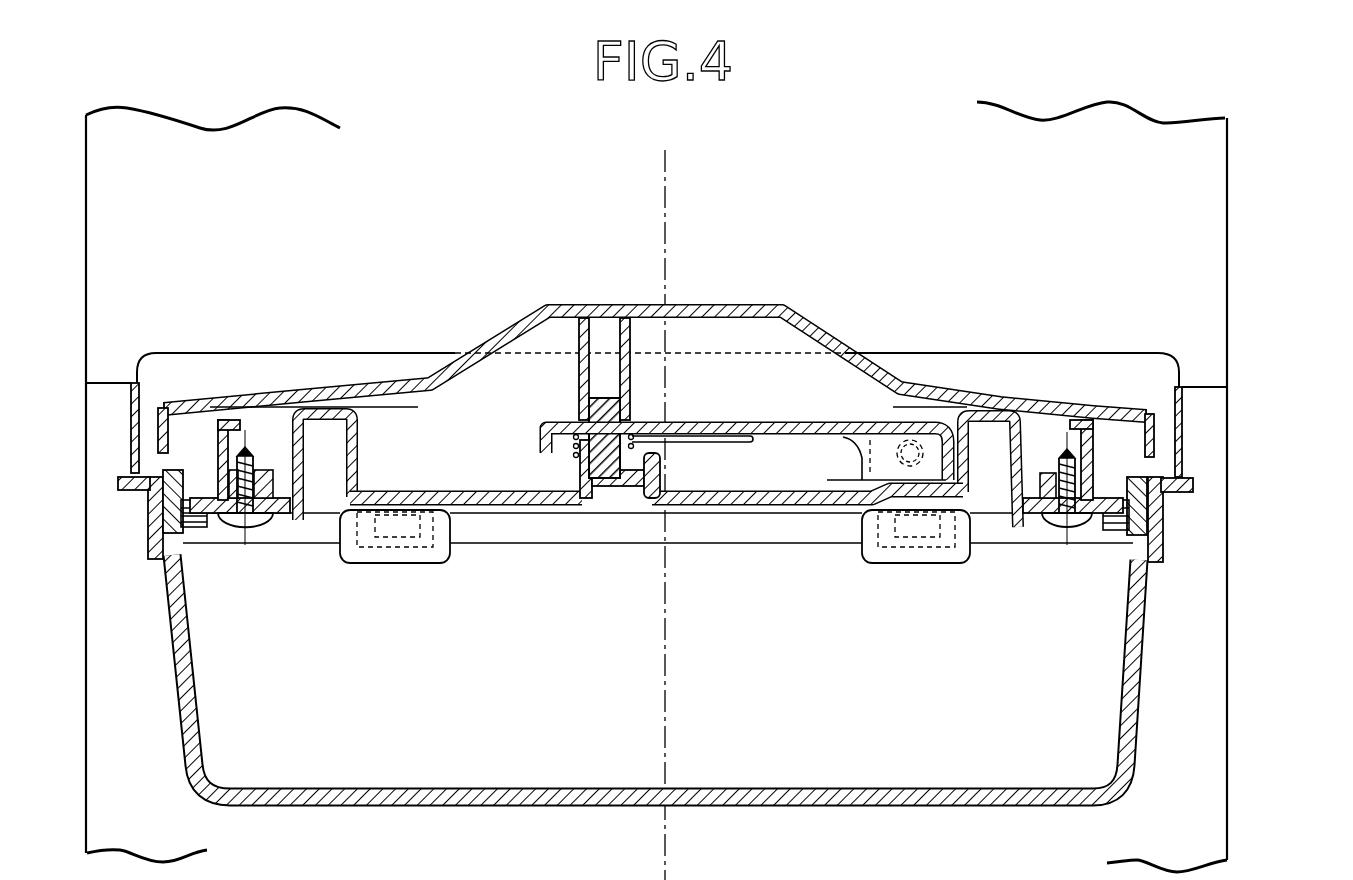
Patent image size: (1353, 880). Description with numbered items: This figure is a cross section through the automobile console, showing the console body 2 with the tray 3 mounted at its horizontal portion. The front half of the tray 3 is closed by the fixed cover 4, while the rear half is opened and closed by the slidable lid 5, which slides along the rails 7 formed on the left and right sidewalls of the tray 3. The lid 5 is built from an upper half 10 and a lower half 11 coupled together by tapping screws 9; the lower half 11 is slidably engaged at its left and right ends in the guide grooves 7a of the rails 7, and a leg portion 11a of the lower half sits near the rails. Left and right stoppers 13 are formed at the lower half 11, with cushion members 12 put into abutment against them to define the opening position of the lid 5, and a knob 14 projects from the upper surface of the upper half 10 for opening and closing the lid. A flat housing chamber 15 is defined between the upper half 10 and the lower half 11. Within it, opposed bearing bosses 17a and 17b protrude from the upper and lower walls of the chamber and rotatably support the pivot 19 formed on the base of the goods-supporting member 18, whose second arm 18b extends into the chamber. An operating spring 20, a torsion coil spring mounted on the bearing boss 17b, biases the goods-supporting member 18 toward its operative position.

The console body 2 is at (1227, 233).
The tray 3 is at (725, 808).
The fixed cover 4 is at (553, 546).
The slidable lid 5 is at (656, 352).
The rail 7 is at (150, 490).
The guide groove 7a is at (200, 522).
The tapping screw 9 is at (250, 522).
The upper half 10 is at (905, 380).
The lower half 11 is at (922, 274).
The leg portion 11a is at (225, 522).
The cushion member 12 is at (422, 570).
The stopper 13 is at (370, 566).
The knob 14 is at (612, 305).
The housing chamber 15 is at (680, 485).
The bearing boss 17a is at (630, 372).
The bearing boss 17b is at (575, 452).
The goods-supporting member 18 is at (785, 444).
The second arm 18b is at (797, 420).
The pivot 19 is at (596, 398).
The operating spring 20 is at (680, 442).